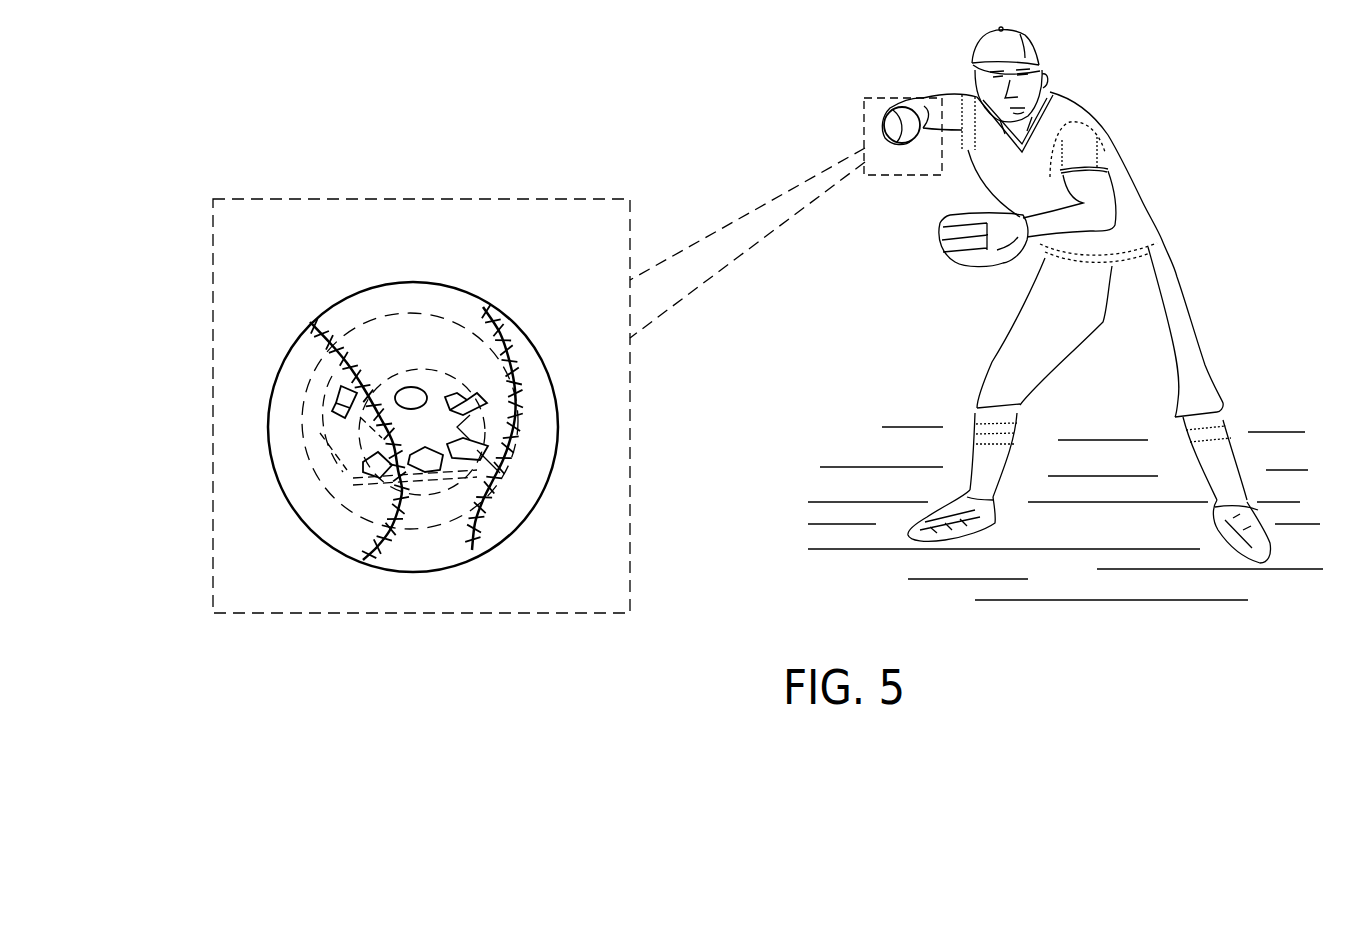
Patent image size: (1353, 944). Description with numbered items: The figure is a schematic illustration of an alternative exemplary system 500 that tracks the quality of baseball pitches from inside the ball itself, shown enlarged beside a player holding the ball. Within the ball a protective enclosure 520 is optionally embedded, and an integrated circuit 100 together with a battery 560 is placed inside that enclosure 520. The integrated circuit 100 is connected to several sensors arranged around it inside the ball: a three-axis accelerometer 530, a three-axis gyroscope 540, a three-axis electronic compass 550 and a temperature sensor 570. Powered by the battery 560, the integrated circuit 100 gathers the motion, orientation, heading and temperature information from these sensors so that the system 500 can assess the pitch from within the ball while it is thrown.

The system 500 is at (365, 182).
The protective enclosure 520 is at (381, 318).
The battery 560 is at (410, 390).
The temperature sensor 570 is at (461, 392).
The integrated circuit 100 is at (318, 417).
The 3-axis accelerometer 530 is at (370, 477).
The 3-axis gyroscope 540 is at (434, 460).
The 3-axis electronic compass 550 is at (503, 473).